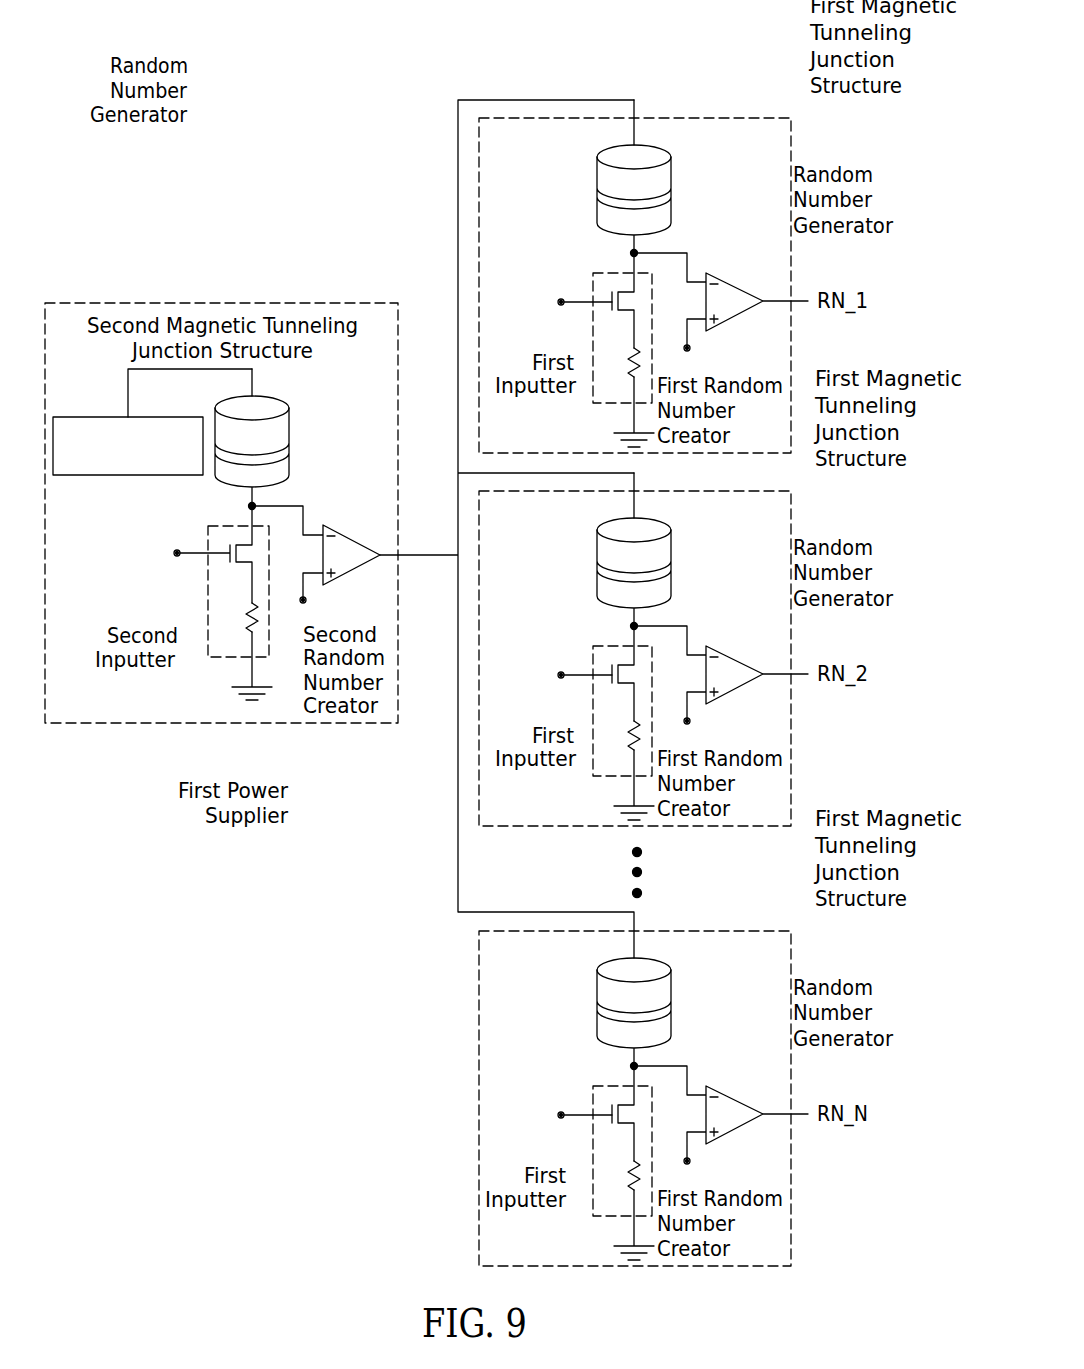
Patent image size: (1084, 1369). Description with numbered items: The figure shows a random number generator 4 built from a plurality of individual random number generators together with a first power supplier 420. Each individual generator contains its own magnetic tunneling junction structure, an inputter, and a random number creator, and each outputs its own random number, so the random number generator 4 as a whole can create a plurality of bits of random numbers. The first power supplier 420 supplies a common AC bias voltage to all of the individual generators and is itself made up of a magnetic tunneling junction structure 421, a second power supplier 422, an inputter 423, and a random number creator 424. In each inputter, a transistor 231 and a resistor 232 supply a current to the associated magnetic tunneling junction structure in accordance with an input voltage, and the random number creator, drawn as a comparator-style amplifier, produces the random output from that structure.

The random number generator 4 is at (248, 121).
The first power supplier 420 is at (232, 724).
The magnetic tunneling junction structure 421 is at (297, 392).
The second power supplier 422 is at (140, 476).
The inputter 423 is at (208, 612).
The random number creator 424 is at (350, 578).
The transistor 231 is at (208, 553).
The resistor 232 is at (248, 603).